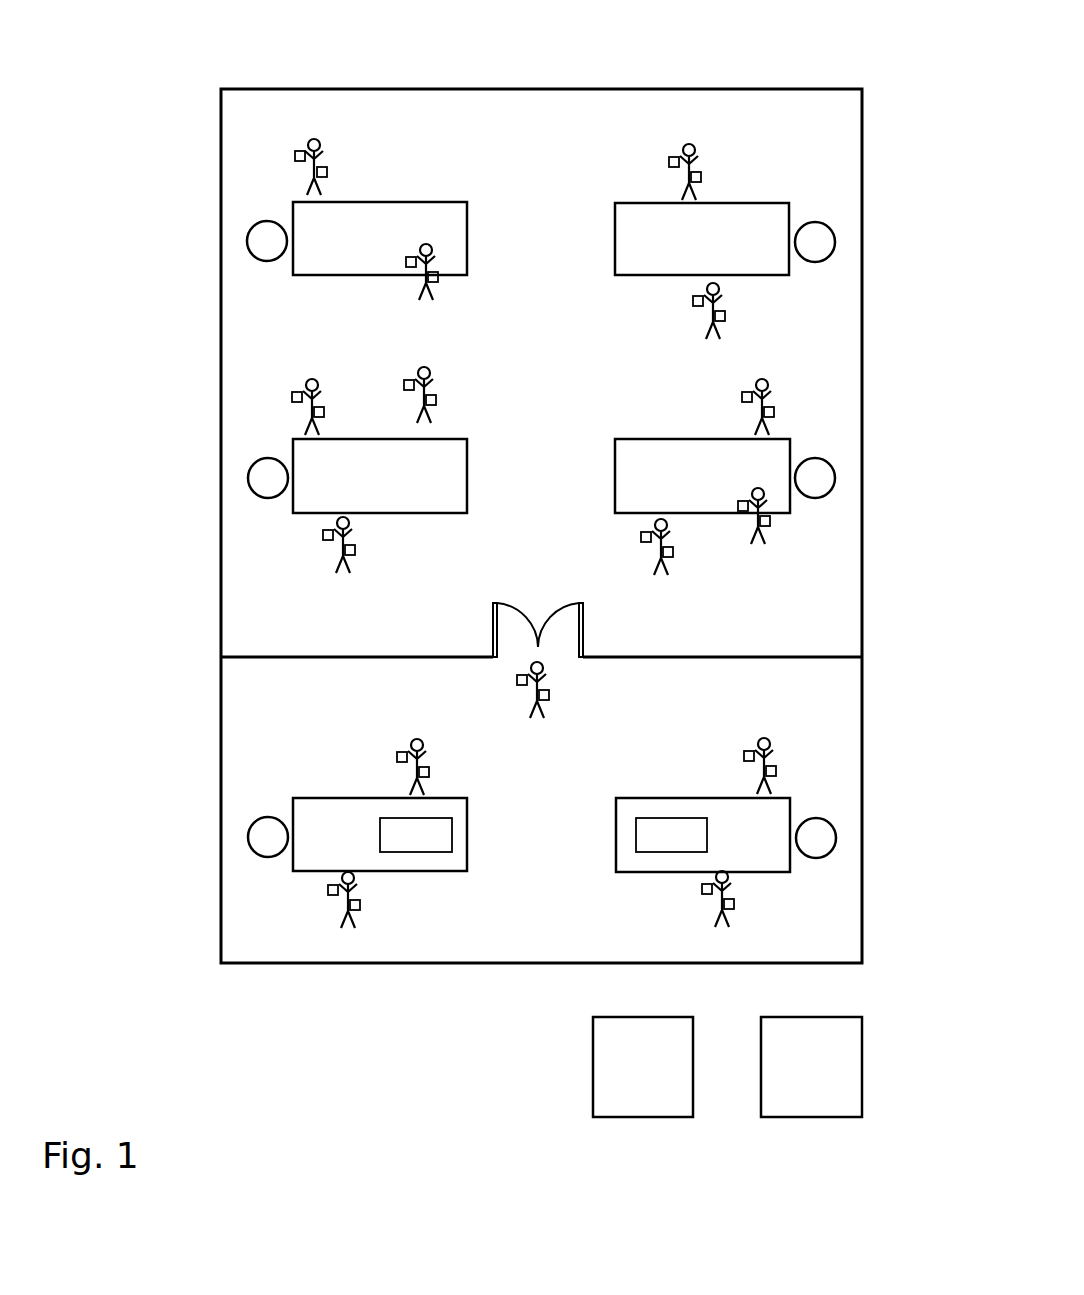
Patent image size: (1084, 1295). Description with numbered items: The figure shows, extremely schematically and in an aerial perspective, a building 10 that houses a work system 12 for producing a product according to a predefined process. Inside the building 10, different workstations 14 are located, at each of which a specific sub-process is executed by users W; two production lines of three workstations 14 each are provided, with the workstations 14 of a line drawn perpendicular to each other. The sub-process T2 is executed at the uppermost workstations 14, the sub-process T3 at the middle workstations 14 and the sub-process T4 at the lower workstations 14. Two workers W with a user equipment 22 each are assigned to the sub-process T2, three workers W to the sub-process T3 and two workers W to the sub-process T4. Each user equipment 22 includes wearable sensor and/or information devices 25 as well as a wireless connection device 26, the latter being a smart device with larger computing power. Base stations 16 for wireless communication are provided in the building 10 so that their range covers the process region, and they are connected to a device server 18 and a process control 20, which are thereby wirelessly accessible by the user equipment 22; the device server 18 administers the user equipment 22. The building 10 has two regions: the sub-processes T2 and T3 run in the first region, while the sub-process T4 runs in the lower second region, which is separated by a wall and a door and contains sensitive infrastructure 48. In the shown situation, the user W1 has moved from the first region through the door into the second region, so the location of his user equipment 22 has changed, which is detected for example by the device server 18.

The building 10 is at (506, 123).
The work system 12 is at (258, 44).
The workstation 14 is at (385, 226).
The base station 16 is at (267, 243).
The device server 18 is at (842, 1075).
The process control 20 is at (615, 1078).
The user equipment 22 is at (315, 94).
The wearable sensor and/or information device 25 is at (300, 150).
The wireless connection device 26 is at (326, 168).
The sensitive infrastructure 48 is at (420, 842).
The user W is at (275, 178).
The user who has moved into the second region W1 is at (590, 687).
The sub-process T2 is at (143, 158).
The sub-process T3 is at (143, 400).
The sub-process T4 is at (143, 772).